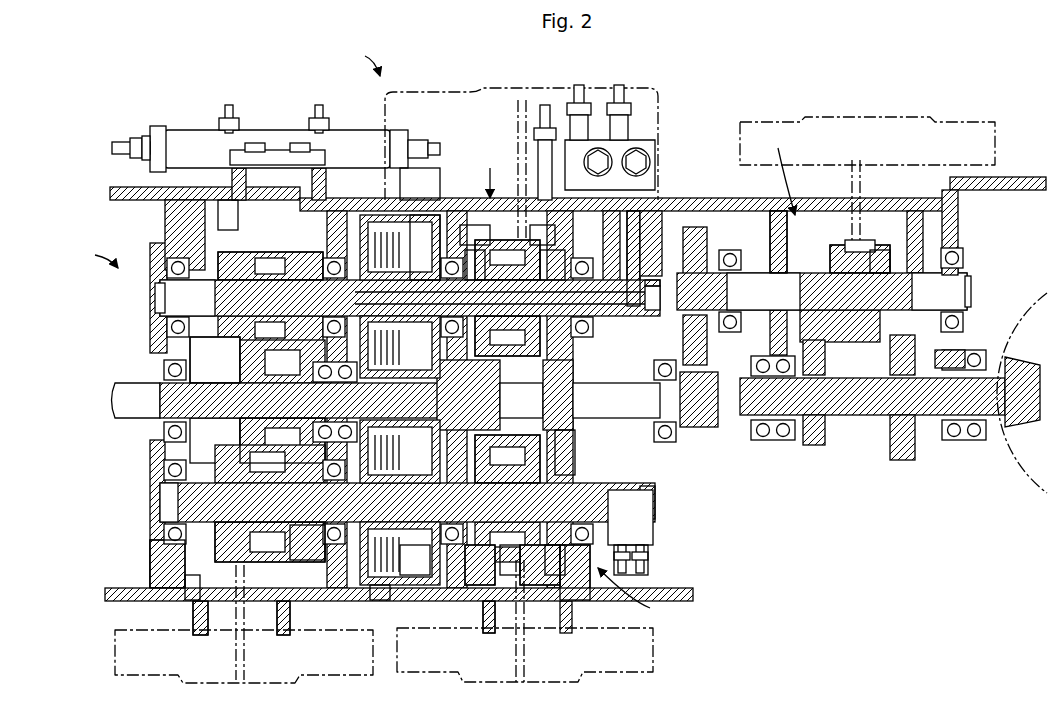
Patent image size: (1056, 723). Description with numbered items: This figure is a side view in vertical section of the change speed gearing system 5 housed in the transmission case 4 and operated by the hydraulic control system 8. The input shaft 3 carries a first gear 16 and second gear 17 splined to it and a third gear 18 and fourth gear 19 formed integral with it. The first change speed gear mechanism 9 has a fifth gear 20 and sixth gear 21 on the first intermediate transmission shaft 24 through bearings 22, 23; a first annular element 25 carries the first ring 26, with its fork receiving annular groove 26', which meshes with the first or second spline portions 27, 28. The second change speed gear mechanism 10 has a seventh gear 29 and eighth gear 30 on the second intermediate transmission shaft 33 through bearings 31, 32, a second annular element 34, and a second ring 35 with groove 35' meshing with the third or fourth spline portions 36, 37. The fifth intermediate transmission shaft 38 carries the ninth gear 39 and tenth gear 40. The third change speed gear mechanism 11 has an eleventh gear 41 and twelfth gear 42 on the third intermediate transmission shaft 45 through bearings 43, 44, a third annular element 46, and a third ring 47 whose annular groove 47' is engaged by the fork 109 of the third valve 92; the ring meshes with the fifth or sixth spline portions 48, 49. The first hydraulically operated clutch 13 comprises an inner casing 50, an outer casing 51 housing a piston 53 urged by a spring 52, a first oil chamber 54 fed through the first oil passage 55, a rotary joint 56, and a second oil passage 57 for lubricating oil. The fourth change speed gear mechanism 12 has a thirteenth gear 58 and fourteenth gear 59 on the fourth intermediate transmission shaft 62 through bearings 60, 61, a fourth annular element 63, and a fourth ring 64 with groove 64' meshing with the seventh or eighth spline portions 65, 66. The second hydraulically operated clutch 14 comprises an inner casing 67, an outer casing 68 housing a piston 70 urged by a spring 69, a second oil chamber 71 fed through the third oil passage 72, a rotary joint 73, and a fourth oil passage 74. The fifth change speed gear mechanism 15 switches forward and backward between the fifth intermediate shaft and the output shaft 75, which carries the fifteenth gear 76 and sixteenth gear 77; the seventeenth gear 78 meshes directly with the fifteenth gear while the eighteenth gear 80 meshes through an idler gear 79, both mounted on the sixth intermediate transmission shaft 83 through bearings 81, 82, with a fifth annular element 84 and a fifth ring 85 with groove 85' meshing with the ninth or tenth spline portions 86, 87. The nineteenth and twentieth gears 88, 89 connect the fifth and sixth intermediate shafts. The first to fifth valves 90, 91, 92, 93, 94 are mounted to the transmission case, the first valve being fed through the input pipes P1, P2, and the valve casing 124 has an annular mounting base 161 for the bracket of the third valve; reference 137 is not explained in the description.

The input shaft 3 is at (125, 395).
The transmission case 4 is at (118, 594).
The change speed gearing system 5 is at (91, 248).
The hydraulic control system 8 is at (363, 58).
The first change speed gear mechanism 9 is at (190, 228).
The second change speed gear mechanism 10 is at (190, 582).
The third change speed gear mechanism 11 is at (489, 173).
The fourth change speed gear mechanism 12 is at (637, 595).
The first hydraulically operated clutch 13 is at (410, 185).
The second hydraulically operated clutch 14 is at (385, 602).
The fifth change speed gear mechanism 15 is at (778, 172).
The first gear 16 is at (163, 372).
The second gear 17 is at (212, 362).
The third gear 18 is at (215, 398).
The fourth gear 19 is at (305, 422).
The fifth gear 20 is at (228, 192).
The sixth gear 21 is at (316, 130).
The bearing 22 is at (187, 298).
The bearing 23 is at (410, 298).
The first intermediate transmission shaft 24 is at (158, 298).
The first annular element 25 is at (253, 298).
The first ring 26 is at (248, 191).
The fork receiving annular groove 26' is at (270, 400).
The first spline portion 27 is at (236, 247).
The second spline portion 28 is at (293, 215).
The seventh gear 29 is at (200, 602).
The eighth gear 30 is at (288, 602).
The bearing 31 is at (194, 502).
The bearing 32 is at (280, 486).
The second intermediate transmission shaft 33 is at (160, 500).
The second annular element 34 is at (407, 502).
The second ring 35 is at (270, 573).
The fork receiving annular groove 35' is at (224, 622).
The third spline portion 36 is at (172, 560).
The fourth spline portion 37 is at (290, 553).
The fifth intermediate transmission shaft 38 is at (658, 377).
The ninth gear 39 is at (515, 345).
The tenth gear 40 is at (608, 390).
The eleventh gear 41 is at (472, 258).
The twelfth gear 42 is at (570, 260).
The bearing 43 is at (468, 395).
The bearing 44 is at (560, 395).
The third intermediate transmission shaft 45 is at (648, 304).
The third annular element 46 is at (522, 378).
The third ring 47 is at (507, 246).
The annular groove 47' is at (519, 170).
The fifth spline portion 48 is at (470, 226).
The sixth spline portion 49 is at (545, 226).
The inner casing 50 is at (362, 258).
The outer casing 51 is at (410, 196).
The spring 52 is at (402, 370).
The hydraulic piston 53 is at (405, 208).
The first oil chamber 54 is at (495, 297).
The first oil passage 55 is at (650, 286).
The rotary joint 56 is at (648, 236).
The second oil passage 57 is at (590, 320).
The thirteenth gear 58 is at (480, 547).
The fourteenth gear 59 is at (585, 568).
The bearing 60 is at (490, 562).
The bearing 61 is at (555, 568).
The fourth intermediate transmission shaft 62 is at (660, 515).
The fourth annular element 63 is at (520, 456).
The fourth ring 64 is at (540, 584).
The fork receiving annular groove 64' is at (533, 638).
The seventh spline portion 65 is at (515, 568).
The eighth spline portion 66 is at (570, 446).
The inner casing 67 is at (345, 573).
The outer casing 68 is at (415, 578).
The spring 69 is at (352, 394).
The hydraulic piston 70 is at (420, 568).
The second oil chamber 71 is at (432, 440).
The third oil passage 72 is at (655, 494).
The rotary joint 73 is at (646, 540).
The fourth oil passage 74 is at (622, 483).
The output shaft 75 is at (855, 418).
The fifteenth gear 76 is at (812, 447).
The sixteenth gear 77 is at (903, 460).
The seventeenth gear 78 is at (786, 246).
The idler gear 79 is at (920, 380).
The eighteenth gear 80 is at (930, 235).
The bearing 81 is at (798, 290).
The bearing 82 is at (913, 290).
The sixth intermediate transmission shaft 83 is at (970, 285).
The fifth annular element 84 is at (848, 273).
The fifth ring 85 is at (867, 213).
The fork receiving annular groove 85' is at (878, 167).
The ninth spline portion 86 is at (836, 242).
The tenth spline portion 87 is at (882, 250).
The nineteenth gear 88 is at (700, 227).
The twentieth gear 89 is at (705, 440).
The first valve 90 is at (193, 132).
The second valve 91 is at (212, 684).
The third valve 92 is at (478, 92).
The fourth valve 93 is at (500, 682).
The fifth valve 94 is at (820, 117).
The fork 109 is at (545, 105).
The valve casing 124 is at (655, 140).
The column 137 is at (662, 205).
The annular mounting base 161 is at (460, 125).
The input pipe P1 is at (118, 140).
The input pipe P2 is at (433, 143).